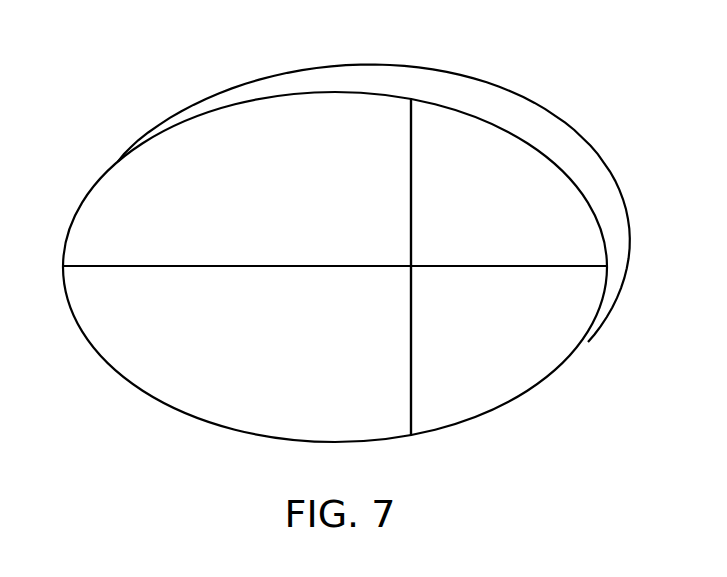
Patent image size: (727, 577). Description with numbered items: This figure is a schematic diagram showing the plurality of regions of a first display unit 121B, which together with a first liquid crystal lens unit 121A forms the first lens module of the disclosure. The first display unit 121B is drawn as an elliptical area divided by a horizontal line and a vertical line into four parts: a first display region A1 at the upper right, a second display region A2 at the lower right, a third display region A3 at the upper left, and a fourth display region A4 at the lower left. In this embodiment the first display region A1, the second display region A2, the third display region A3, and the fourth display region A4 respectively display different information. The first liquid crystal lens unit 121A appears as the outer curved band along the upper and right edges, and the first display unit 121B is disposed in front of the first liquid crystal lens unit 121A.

The first display unit 121B is at (262, 95).
The first liquid crystal lens unit 121A is at (453, 74).
The first display region A1 is at (509, 182).
The second display region A2 is at (509, 350).
The third display region A3 is at (237, 182).
The fourth display region A4 is at (237, 350).